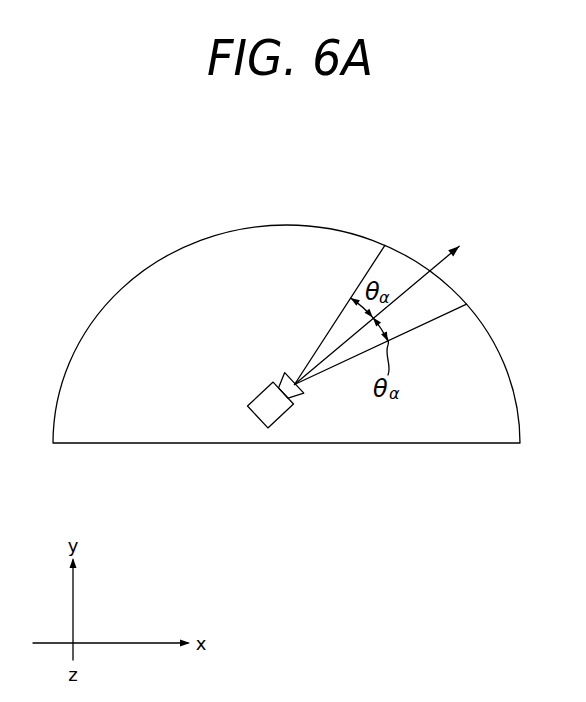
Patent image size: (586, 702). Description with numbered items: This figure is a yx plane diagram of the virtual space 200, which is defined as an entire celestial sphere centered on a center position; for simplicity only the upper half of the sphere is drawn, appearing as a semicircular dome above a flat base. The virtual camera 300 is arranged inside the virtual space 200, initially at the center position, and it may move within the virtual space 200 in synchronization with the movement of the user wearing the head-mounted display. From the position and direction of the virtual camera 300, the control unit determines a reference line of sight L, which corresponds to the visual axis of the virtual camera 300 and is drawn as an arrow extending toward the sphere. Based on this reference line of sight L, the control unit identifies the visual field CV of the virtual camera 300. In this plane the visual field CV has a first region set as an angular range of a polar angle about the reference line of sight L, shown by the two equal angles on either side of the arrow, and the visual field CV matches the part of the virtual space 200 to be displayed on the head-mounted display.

The virtual space 200 is at (228, 232).
The virtual camera 300 is at (284, 415).
The reference line of sight L is at (437, 264).
The visual field CV is at (437, 316).